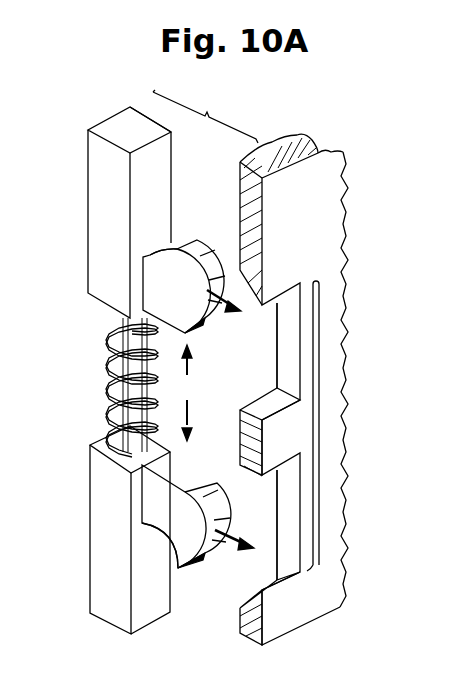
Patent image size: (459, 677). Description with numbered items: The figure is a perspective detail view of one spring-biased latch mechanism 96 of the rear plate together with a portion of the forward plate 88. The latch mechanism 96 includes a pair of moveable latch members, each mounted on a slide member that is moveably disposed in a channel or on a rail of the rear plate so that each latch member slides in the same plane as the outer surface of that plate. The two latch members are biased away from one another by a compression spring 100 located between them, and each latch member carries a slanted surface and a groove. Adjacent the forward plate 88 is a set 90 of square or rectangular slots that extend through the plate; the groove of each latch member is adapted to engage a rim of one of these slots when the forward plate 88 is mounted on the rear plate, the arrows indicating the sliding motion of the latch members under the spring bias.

The forward plate 88 is at (325, 200).
The set of slots 90 is at (322, 418).
The latch mechanism 96 is at (100, 102).
The compression spring 100 is at (100, 369).